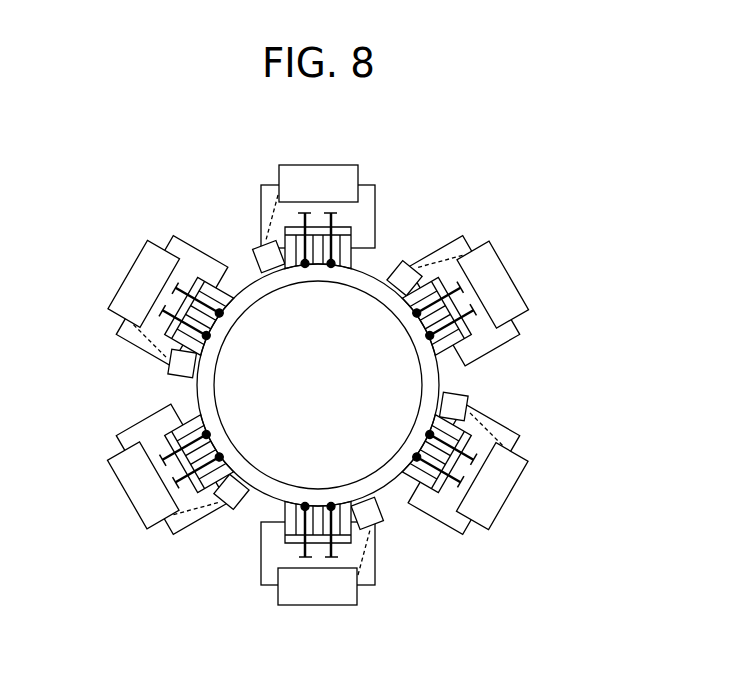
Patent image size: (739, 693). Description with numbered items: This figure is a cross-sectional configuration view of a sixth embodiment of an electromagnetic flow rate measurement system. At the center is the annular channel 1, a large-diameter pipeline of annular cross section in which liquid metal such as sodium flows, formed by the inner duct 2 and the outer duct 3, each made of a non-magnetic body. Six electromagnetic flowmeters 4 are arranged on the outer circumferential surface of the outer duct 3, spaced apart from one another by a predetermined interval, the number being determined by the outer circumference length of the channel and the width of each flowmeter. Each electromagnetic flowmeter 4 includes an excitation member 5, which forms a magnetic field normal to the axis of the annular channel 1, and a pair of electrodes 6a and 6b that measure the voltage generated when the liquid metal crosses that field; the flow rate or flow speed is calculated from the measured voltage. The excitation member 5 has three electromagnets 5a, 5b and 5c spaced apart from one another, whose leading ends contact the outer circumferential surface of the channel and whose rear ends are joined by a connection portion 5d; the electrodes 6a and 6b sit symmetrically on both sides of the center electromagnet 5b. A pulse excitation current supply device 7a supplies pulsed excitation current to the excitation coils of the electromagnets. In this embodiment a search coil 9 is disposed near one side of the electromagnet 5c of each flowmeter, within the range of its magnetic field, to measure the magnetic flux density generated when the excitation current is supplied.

The annular channel 1 is at (356, 418).
The inner duct 2 is at (375, 303).
The outer duct 3 is at (442, 378).
The electromagnetic flowmeter 4 is at (344, 157).
The excitation member 5 is at (323, 345).
The electromagnet 5a is at (354, 258).
The center electromagnet 5b is at (323, 246).
The electromagnet 5c is at (291, 247).
The connection portion 5d is at (290, 235).
The electrode 6a is at (298, 213).
The electrode 6b is at (336, 213).
The pulse excitation current supply device 7a is at (318, 174).
The search coil 9 is at (257, 248).